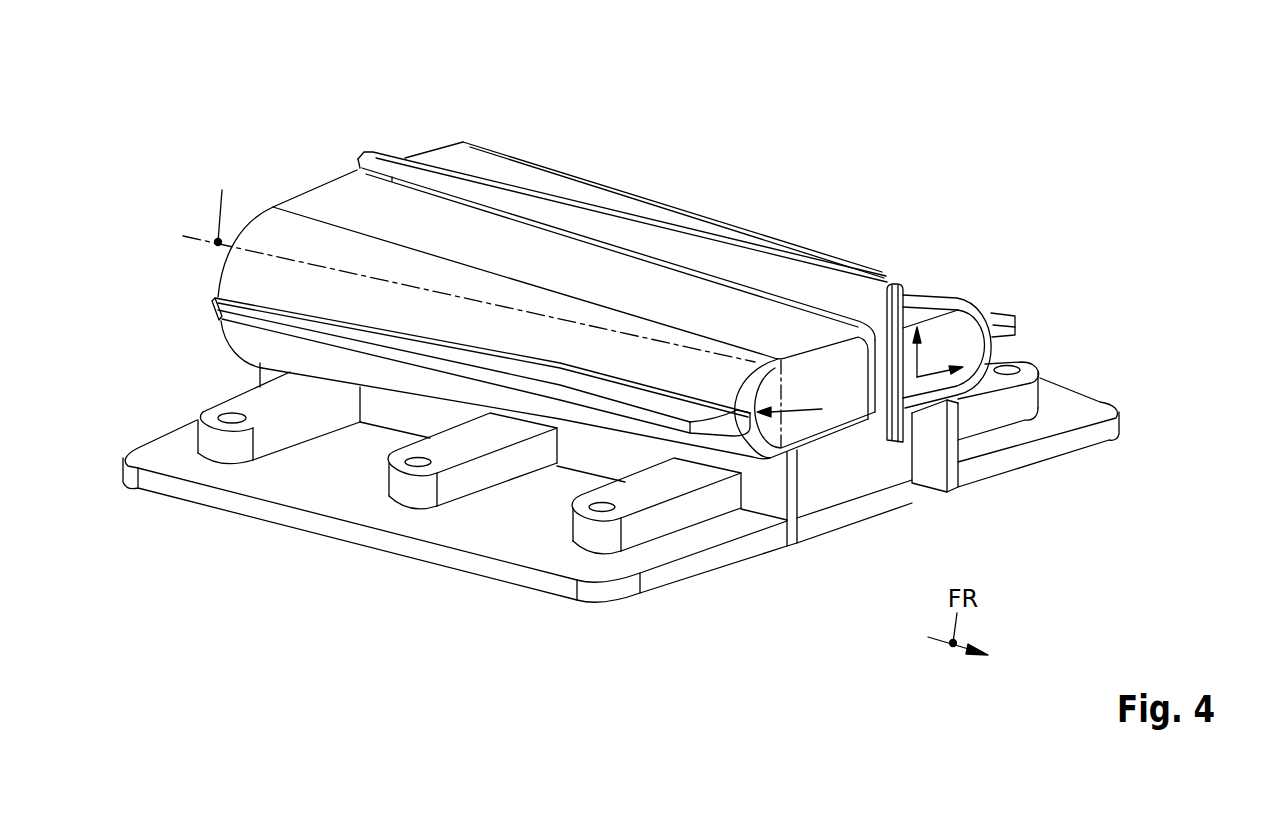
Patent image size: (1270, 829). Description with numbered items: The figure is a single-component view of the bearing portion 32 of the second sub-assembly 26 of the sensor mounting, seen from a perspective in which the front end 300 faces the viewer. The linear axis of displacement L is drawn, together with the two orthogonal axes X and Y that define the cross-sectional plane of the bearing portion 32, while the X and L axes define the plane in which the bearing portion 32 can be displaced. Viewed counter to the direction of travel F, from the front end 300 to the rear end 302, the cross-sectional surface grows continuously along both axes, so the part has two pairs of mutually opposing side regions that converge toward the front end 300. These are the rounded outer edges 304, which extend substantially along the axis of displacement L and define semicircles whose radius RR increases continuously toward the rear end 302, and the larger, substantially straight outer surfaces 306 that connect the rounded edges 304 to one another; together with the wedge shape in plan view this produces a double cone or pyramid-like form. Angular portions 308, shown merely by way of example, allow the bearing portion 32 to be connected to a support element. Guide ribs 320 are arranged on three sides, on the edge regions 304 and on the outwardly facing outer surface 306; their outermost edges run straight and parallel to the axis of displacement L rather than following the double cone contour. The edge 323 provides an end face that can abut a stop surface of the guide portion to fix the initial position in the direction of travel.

The second sub-assembly 26 is at (1067, 118).
The bearing portion 32 is at (958, 160).
The front end 300 is at (870, 215).
The rear end 302 is at (462, 137).
The rounded outer edges 304 is at (945, 287).
The outer surfaces 306 is at (727, 226).
The angular portions 308 is at (775, 490).
The guide ribs 320 is at (610, 215).
The edge 323 is at (894, 283).